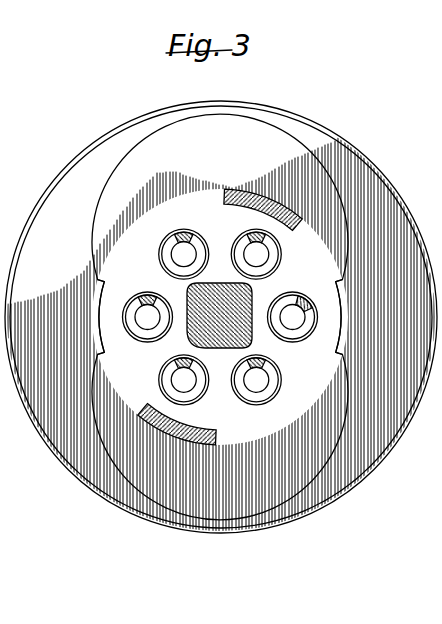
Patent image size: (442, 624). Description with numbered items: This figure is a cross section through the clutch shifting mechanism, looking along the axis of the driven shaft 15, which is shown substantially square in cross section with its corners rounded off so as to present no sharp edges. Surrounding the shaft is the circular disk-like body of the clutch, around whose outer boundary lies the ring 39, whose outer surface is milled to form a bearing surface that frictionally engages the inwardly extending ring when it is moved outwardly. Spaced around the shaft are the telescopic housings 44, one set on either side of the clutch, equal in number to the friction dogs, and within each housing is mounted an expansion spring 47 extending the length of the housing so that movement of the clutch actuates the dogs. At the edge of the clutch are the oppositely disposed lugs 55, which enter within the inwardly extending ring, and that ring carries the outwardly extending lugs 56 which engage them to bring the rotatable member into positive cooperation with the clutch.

The ring 39 is at (372, 170).
The lugs 55 is at (295, 229).
The expansion spring 47 is at (299, 295).
The telescopic housings 44 is at (305, 308).
The outwardly extending lugs 56 is at (101, 350).
The driven shaft 15 is at (227, 346).